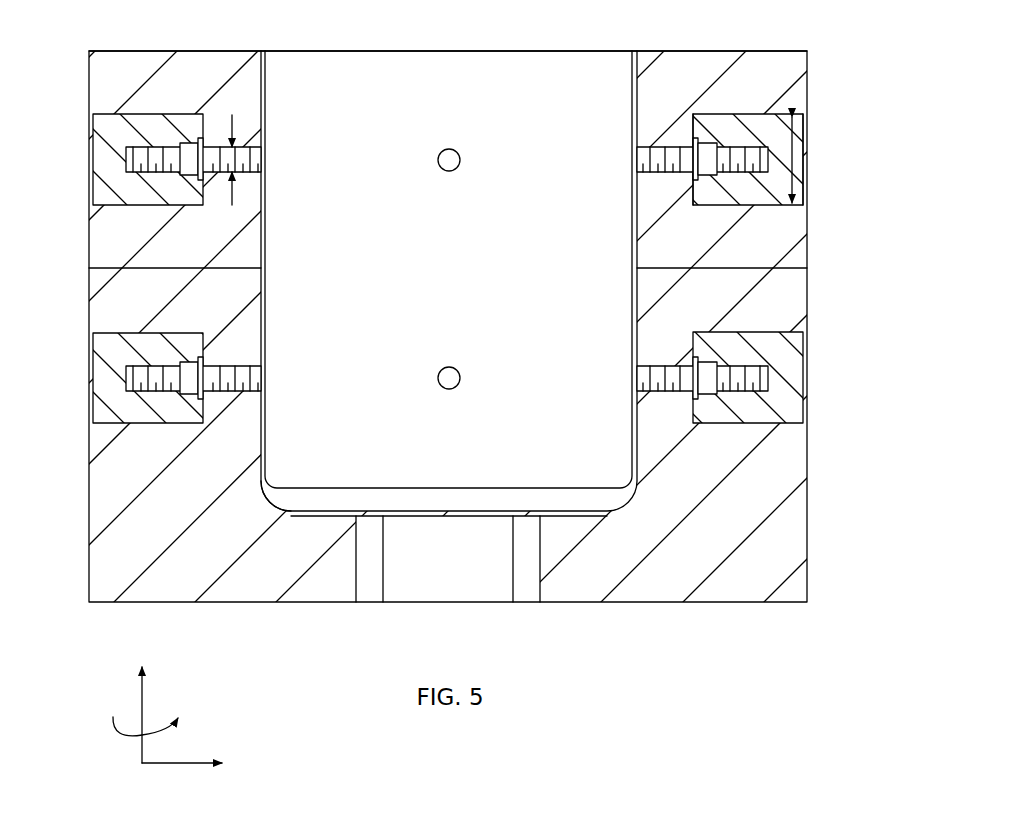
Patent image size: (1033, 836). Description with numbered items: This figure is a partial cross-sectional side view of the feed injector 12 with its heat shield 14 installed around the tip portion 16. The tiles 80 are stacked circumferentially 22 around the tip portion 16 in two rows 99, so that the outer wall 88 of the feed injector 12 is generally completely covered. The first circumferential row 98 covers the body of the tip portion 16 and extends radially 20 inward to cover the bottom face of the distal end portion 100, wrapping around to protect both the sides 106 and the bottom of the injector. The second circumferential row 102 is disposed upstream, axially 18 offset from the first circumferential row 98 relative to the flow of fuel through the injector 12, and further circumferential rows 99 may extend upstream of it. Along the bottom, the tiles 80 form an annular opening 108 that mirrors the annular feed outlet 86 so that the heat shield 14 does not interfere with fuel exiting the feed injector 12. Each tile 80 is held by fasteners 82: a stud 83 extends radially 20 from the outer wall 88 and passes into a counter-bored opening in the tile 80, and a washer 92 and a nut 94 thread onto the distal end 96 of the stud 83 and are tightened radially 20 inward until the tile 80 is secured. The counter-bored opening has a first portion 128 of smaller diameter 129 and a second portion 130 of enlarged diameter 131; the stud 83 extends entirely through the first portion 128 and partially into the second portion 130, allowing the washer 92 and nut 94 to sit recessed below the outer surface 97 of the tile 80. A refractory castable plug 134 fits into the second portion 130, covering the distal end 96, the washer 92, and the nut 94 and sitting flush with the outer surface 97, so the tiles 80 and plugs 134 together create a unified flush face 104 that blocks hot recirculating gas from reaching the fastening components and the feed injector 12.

The feed injector 12 is at (542, 64).
The heat shield 14 is at (120, 50).
The tip portion 16 is at (451, 68).
The axial direction 18 is at (142, 698).
The radial direction 20 is at (183, 766).
The circumferential direction 22 is at (127, 733).
The tile 80 is at (95, 80).
The fastener 82 is at (655, 392).
The stud 83 is at (680, 372).
The feed outlet 86 is at (450, 511).
The outer wall 88 is at (263, 70).
The washer 92 is at (698, 398).
The nut 94 is at (707, 363).
The distal end 96 is at (759, 379).
The outer surface 97 is at (88, 226).
The first circumferential row 98 is at (88, 520).
The circumferential rows 99 is at (808, 222).
The distal end portion 100 is at (273, 497).
The second circumferential row 102 is at (90, 97).
The flush face 104 is at (90, 288).
The sides 106 is at (260, 260).
The annular opening 108 is at (445, 585).
The first portion 128 is at (660, 140).
The smaller diameter 129 is at (232, 115).
The second portion 130 is at (800, 163).
The enlarged diameter 131 is at (787, 152).
The plug 134 is at (800, 135).